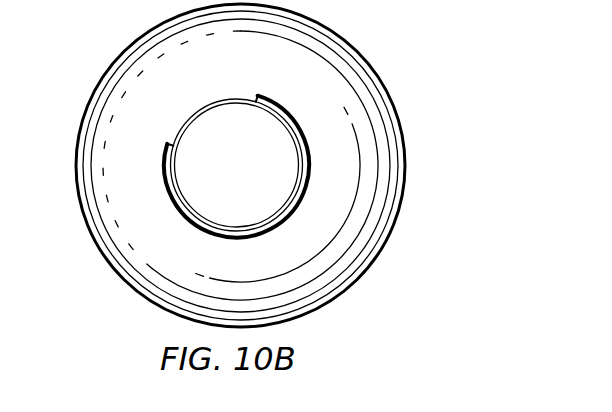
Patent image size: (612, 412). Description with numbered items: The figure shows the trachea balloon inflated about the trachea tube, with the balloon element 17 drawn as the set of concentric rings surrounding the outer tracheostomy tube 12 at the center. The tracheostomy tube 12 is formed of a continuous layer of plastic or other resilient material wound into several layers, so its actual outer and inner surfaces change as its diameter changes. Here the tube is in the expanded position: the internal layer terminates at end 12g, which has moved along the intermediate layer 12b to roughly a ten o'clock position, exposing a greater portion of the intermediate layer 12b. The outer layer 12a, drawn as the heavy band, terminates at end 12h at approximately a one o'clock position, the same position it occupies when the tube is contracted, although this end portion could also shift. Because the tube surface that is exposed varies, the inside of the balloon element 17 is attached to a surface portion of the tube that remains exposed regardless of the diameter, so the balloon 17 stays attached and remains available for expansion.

The outer tracheostomy tube 12 is at (232, 144).
The outer layer 12a is at (283, 107).
The intermediate layer 12b is at (183, 128).
The end of internal layer 12g is at (182, 145).
The end of outer layer 12h is at (255, 100).
The balloon element 17 is at (398, 217).